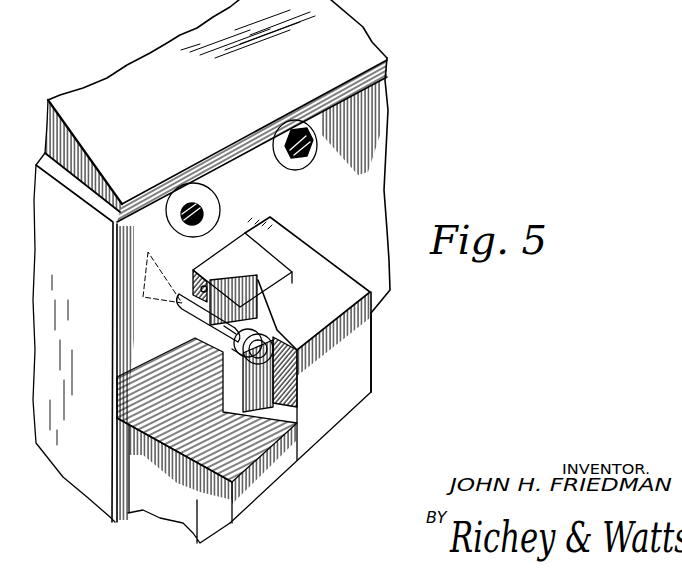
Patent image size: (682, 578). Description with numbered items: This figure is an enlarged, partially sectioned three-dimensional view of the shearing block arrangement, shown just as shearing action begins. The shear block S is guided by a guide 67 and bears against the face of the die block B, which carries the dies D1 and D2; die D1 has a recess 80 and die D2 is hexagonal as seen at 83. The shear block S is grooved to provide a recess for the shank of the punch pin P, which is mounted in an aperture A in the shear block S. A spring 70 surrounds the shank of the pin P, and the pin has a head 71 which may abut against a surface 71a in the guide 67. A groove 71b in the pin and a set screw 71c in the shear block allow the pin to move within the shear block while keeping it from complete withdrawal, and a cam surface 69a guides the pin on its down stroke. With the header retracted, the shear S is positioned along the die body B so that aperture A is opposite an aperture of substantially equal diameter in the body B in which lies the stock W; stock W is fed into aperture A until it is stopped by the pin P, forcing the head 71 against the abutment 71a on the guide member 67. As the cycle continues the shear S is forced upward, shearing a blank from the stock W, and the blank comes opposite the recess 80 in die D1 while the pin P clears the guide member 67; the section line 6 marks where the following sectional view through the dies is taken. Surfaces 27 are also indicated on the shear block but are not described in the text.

The die block B is at (223, 87).
The die D1 is at (215, 192).
The die D2 is at (306, 156).
The recess 80 is at (205, 208).
The hexagonal portion 83 is at (297, 158).
The section line 6- 6 is at (412, 70).
The shear block S is at (272, 262).
The seating pad 27 is at (338, 282).
The punch pin P is at (229, 379).
The set screw 71c is at (266, 270).
The groove 71b is at (180, 336).
The aperture A is at (186, 292).
The stock W is at (182, 306).
The head 71 is at (268, 376).
The abutment surface 71a is at (302, 360).
The spring 70 is at (260, 320).
The cam surface 69a is at (275, 328).
The guide 67 is at (357, 393).